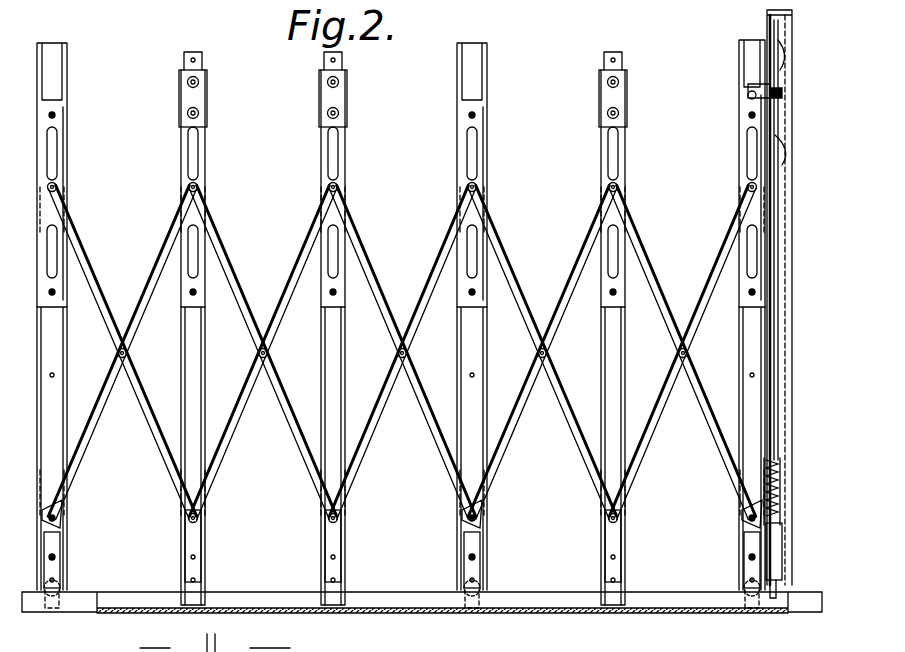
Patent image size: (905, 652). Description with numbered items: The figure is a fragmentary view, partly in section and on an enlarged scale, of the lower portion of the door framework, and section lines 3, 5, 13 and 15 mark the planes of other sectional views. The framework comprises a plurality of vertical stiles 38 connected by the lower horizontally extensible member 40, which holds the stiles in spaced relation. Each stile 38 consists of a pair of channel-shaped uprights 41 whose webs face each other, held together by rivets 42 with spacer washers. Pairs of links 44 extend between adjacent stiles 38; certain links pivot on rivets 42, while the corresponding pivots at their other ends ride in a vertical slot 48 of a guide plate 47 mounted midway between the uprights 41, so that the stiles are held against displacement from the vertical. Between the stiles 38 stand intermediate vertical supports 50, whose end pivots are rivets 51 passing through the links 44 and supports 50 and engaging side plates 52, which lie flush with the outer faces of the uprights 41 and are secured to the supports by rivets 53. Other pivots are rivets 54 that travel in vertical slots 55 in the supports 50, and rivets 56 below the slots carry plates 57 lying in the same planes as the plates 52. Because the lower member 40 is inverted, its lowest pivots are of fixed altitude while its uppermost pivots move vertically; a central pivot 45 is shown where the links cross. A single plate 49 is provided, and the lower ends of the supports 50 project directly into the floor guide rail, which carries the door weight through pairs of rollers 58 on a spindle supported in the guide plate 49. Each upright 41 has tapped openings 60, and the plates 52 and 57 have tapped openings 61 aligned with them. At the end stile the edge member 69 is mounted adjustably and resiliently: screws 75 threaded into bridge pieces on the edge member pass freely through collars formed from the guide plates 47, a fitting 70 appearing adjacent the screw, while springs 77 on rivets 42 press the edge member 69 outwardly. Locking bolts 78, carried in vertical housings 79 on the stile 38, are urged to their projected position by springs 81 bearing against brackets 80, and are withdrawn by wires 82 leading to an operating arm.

The section line 3 is at (768, 622).
The section line 5 is at (748, 443).
The section line 13 is at (472, 8).
The section line 15 is at (172, 33).
The vertical stile 38 is at (70, 104).
The lower extensible member 40 is at (234, 263).
The upright 41 is at (55, 362).
The rivet 42 is at (54, 115).
The link 44 is at (230, 452).
The central pivot 45 is at (398, 353).
The guide plate 47 is at (62, 152).
The vertical slot 48 is at (52, 172).
The plate 49 is at (60, 600).
The intermediate vertical support 50 is at (185, 325).
The rivet 51 is at (200, 518).
The side plate 52 is at (200, 548).
The rivet 53 is at (200, 560).
The rivet 54 is at (197, 187).
The vertical slot 55 is at (190, 152).
The rivet 56 is at (327, 113).
The plate 57 is at (196, 70).
The roller 58 is at (50, 597).
The tapped opening 60 is at (56, 580).
The tapped opening 61 is at (188, 580).
The edge member 69 is at (782, 282).
The bracket 70 is at (760, 88).
The screw 75 is at (748, 95).
The spring 77 is at (782, 146).
The bolt 78 is at (777, 586).
The vertical housing 79 is at (780, 548).
The bracket 80 is at (779, 462).
The spring 81 is at (778, 500).
The wire 82 is at (776, 395).